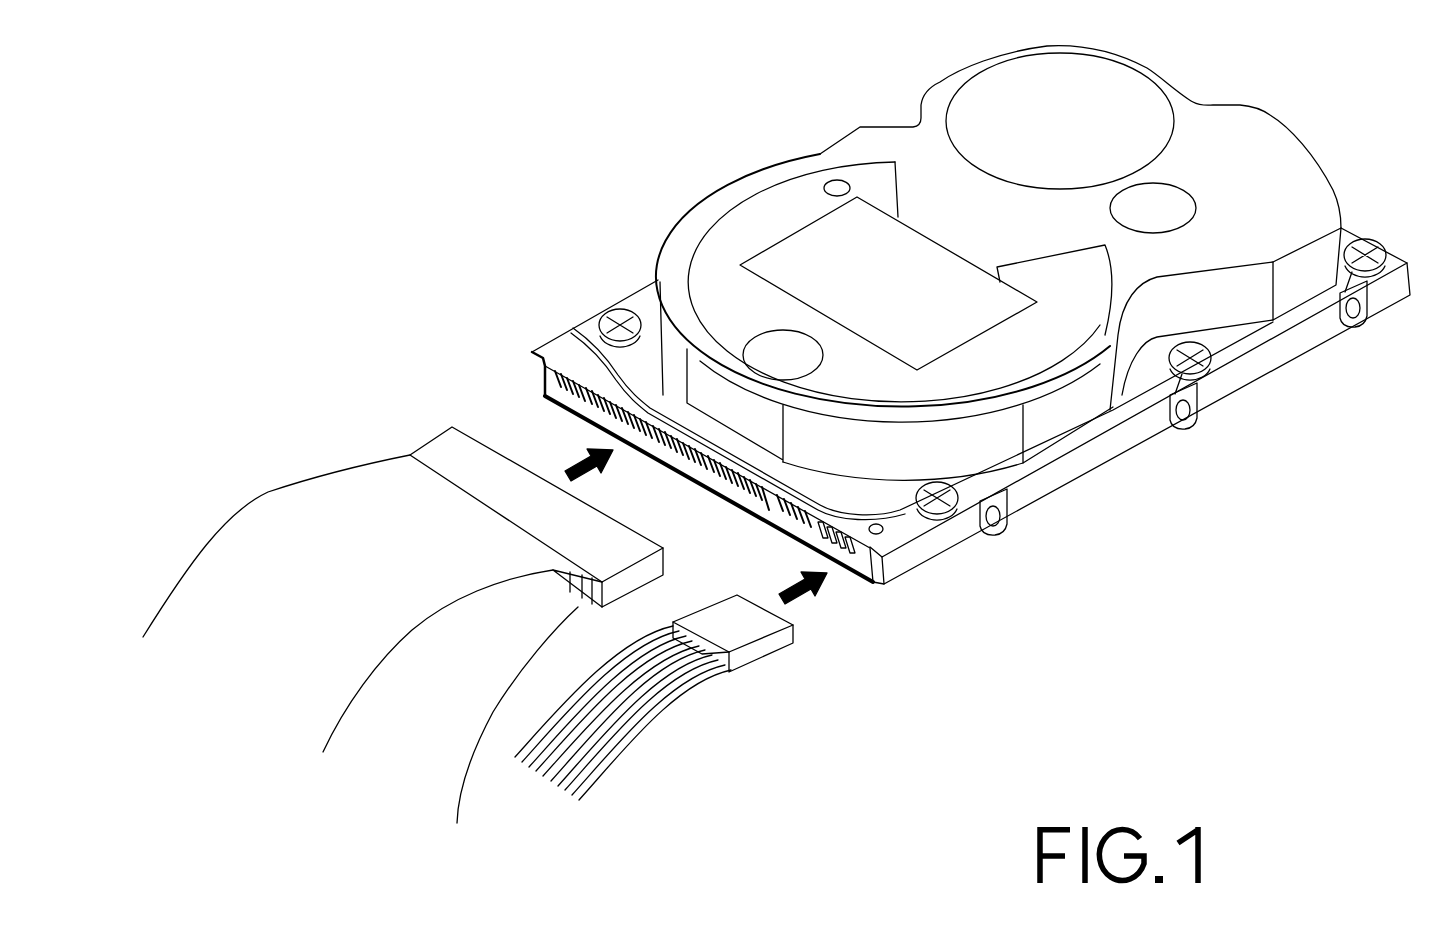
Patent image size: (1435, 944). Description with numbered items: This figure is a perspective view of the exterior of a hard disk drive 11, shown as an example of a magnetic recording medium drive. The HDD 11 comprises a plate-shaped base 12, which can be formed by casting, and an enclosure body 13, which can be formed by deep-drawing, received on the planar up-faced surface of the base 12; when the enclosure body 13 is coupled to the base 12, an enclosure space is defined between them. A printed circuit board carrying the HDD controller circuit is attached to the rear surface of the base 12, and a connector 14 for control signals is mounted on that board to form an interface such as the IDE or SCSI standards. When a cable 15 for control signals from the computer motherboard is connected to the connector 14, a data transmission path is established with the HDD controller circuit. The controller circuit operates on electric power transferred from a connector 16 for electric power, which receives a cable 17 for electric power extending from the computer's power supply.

The hard disk drive 11 is at (983, 348).
The base 12 is at (1410, 296).
The enclosure body 13 is at (1340, 170).
The connector 14 is at (719, 494).
The cable 15 is at (348, 466).
The connector 16 is at (872, 582).
The cable 17 is at (691, 686).